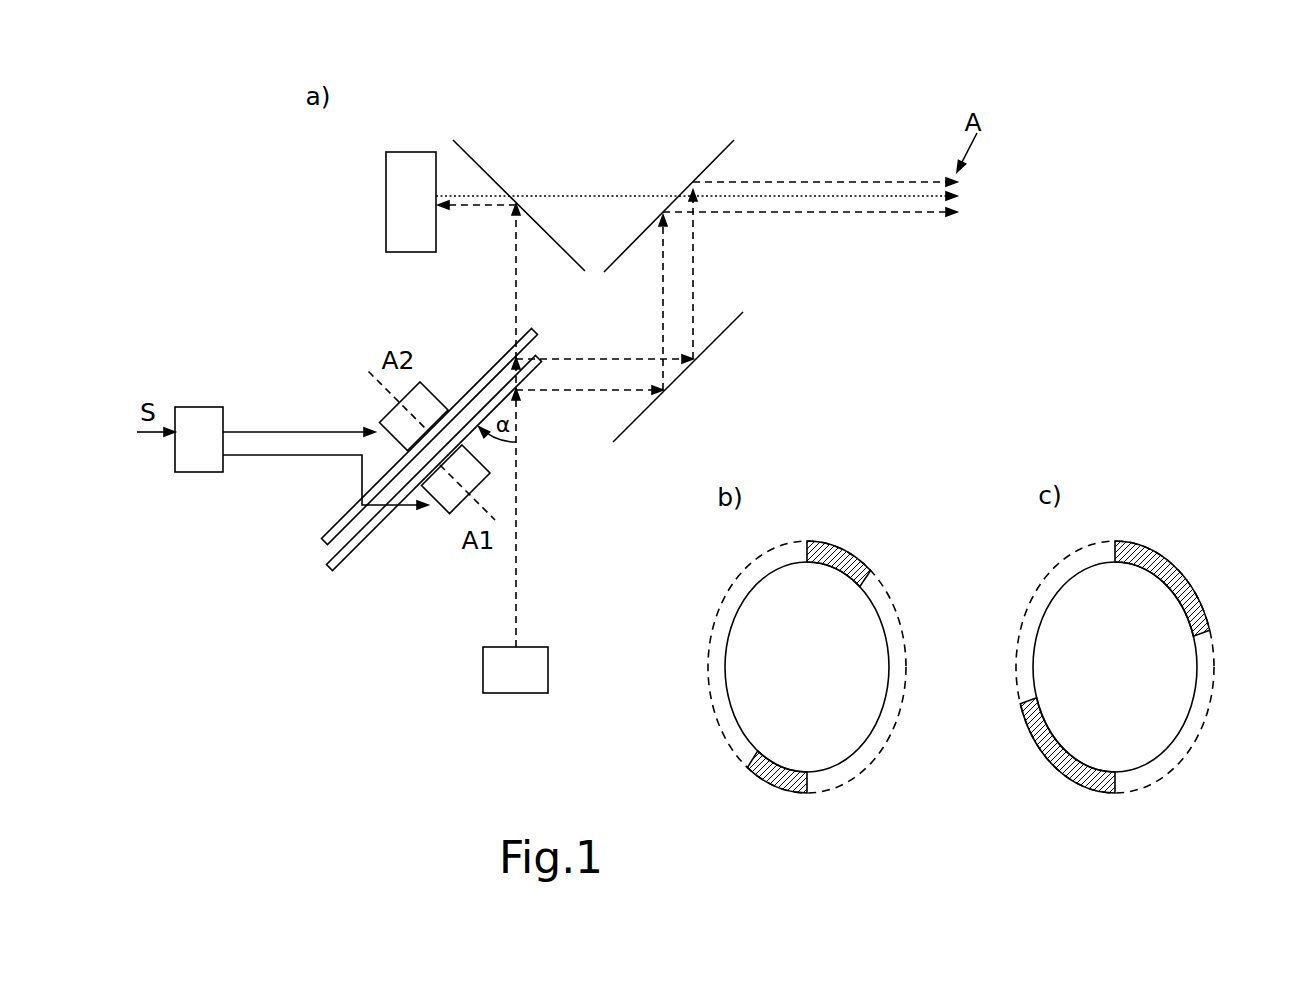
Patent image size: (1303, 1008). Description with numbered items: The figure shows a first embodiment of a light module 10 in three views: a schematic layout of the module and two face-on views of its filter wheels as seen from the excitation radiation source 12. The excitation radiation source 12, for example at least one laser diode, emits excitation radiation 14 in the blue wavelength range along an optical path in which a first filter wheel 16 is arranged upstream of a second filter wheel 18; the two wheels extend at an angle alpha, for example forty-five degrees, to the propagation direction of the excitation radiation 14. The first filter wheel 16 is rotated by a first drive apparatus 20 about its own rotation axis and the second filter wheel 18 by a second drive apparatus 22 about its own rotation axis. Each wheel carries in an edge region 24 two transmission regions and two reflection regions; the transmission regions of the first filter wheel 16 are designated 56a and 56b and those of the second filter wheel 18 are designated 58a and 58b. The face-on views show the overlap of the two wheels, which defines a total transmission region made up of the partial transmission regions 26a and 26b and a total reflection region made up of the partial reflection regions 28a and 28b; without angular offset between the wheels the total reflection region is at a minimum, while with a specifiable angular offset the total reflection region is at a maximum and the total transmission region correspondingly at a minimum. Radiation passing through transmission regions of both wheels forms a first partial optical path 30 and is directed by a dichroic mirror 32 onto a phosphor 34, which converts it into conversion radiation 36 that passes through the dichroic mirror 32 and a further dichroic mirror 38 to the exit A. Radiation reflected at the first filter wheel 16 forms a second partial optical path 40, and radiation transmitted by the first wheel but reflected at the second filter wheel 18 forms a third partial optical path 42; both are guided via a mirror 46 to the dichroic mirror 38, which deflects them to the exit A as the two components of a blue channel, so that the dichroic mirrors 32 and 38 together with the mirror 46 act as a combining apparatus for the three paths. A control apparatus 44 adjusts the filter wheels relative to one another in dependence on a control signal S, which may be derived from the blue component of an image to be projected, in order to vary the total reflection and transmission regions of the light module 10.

The light module 10 is at (289, 335).
The excitation radiation source 12 is at (548, 672).
The excitation radiation 14 is at (517, 553).
The first filter wheel 16 is at (357, 546).
The second filter wheel 18 is at (334, 526).
The first drive apparatus 20 is at (450, 512).
The second drive apparatus 22 is at (390, 412).
The edge region 24 is at (734, 584).
The partial transmission region 26a is at (728, 742).
The partial transmission region 26b is at (892, 606).
The partial reflection region 28a is at (774, 764).
The partial reflection region 28b is at (835, 555).
The first partial optical path 30 is at (517, 278).
The dichroic mirror 32 is at (476, 163).
The phosphor 34 is at (409, 162).
The conversion radiation 36 is at (483, 206).
The dichroic mirror 38 is at (708, 163).
The second partial optical path 40 is at (577, 391).
The third partial optical path 42 is at (603, 359).
The control apparatus 44 is at (200, 415).
The mirror 46 is at (644, 411).
The transmission region of the first filter wheel 56a is at (776, 786).
The transmission region of the first filter wheel 56b is at (848, 574).
The transmission region of the second filter wheel 58a is at (820, 534).
The transmission region of the second filter wheel 58b is at (800, 806).